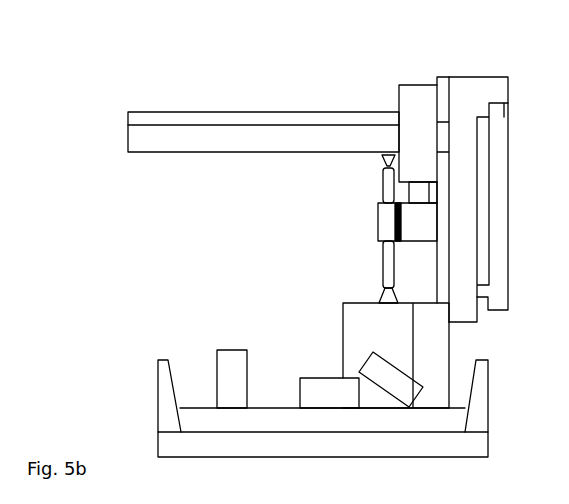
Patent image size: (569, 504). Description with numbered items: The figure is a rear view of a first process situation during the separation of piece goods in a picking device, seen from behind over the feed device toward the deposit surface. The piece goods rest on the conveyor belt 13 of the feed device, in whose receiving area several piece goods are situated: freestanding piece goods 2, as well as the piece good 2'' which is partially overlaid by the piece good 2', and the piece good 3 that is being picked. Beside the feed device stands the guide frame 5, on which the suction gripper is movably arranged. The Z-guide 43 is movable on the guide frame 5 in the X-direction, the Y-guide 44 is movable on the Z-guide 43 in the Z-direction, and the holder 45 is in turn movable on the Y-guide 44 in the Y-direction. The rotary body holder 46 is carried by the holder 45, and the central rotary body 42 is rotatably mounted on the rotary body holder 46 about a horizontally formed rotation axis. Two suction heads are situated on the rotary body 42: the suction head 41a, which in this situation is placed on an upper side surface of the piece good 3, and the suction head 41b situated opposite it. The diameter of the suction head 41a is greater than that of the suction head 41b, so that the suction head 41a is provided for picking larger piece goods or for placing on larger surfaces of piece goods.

The piece good 2 is at (173, 369).
The piece good 2' is at (368, 416).
The piece good 2'' is at (225, 406).
The piece good 3 is at (422, 354).
The guide frame 5 is at (489, 200).
The conveyor belt 13 is at (455, 422).
The suction head 41a is at (385, 268).
The suction head 41b is at (388, 183).
The rotary body 42 is at (388, 217).
The Z-guide 43 is at (455, 248).
The Y-guide 44 is at (232, 130).
The holder 45 is at (423, 130).
The rotary body holder 46 is at (420, 217).